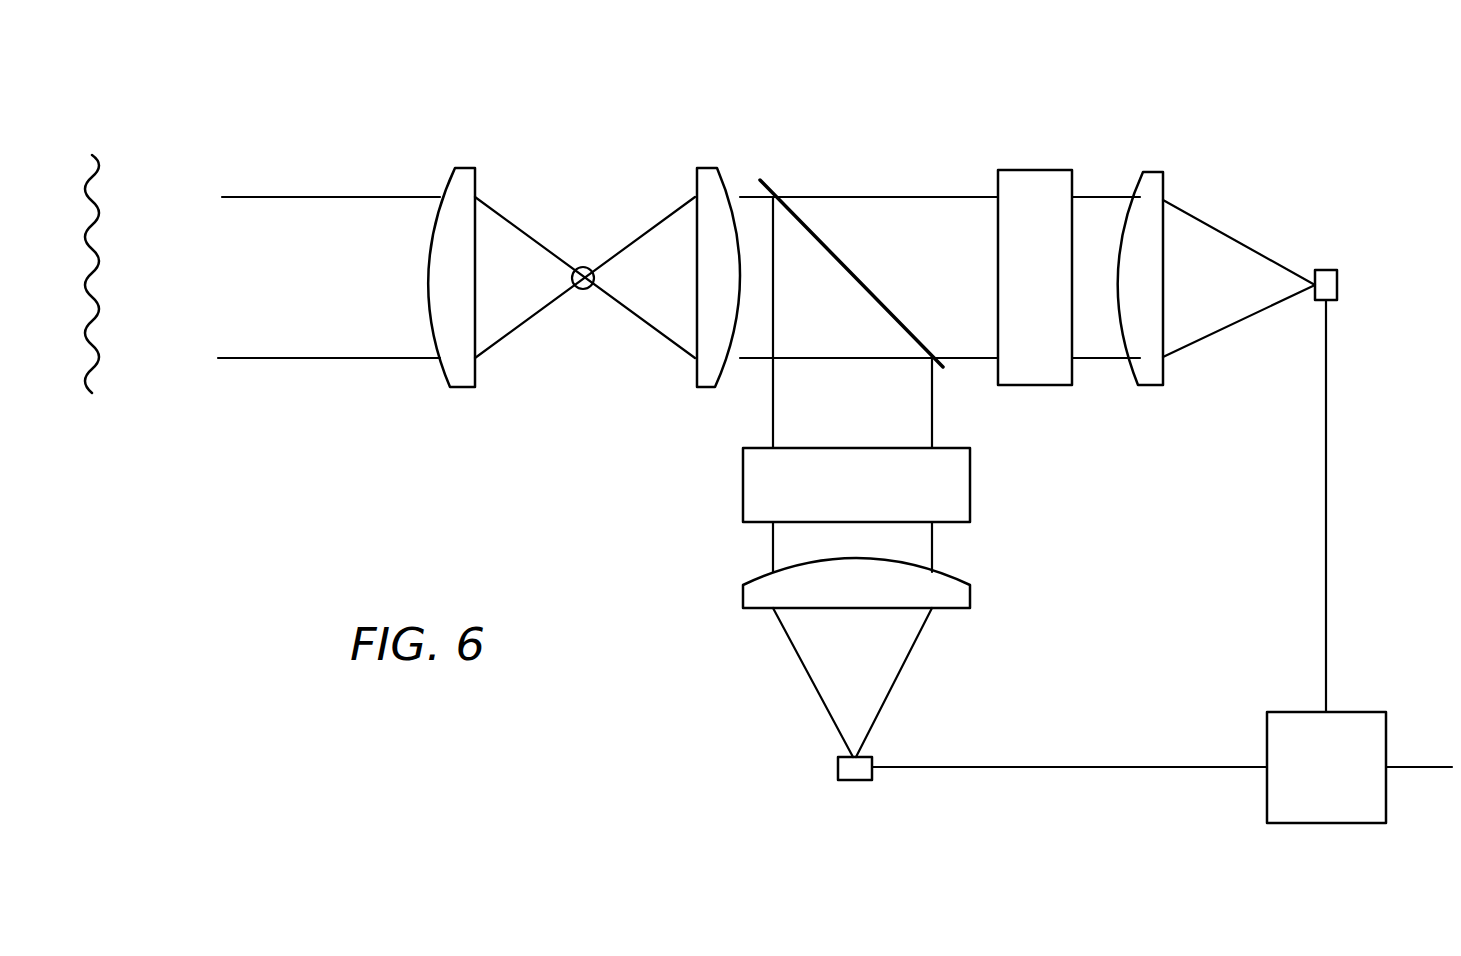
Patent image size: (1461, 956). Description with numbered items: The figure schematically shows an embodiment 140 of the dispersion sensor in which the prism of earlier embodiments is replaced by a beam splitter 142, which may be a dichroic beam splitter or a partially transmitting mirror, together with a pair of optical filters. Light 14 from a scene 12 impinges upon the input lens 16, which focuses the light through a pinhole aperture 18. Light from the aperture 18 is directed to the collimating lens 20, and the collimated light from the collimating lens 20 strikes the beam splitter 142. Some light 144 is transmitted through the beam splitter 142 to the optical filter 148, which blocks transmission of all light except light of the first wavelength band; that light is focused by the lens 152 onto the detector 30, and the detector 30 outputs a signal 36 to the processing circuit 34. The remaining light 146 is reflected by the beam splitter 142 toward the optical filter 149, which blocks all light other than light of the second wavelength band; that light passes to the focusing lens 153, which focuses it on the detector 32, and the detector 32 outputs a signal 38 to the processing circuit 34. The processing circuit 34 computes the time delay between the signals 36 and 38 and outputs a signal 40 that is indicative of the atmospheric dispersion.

The scene 12 is at (97, 136).
The light 14 is at (346, 166).
The input lens 16 is at (462, 165).
The pinhole aperture 18 is at (585, 267).
The collimating lens 20 is at (703, 165).
The embodiment of the sensor 140 is at (892, 70).
The beam splitter 142 is at (842, 252).
The transmitted light 144 is at (948, 236).
The reflected light 146 is at (813, 414).
The optical filter 148 is at (1053, 168).
The optical filter 149 is at (972, 478).
The lens 152 is at (1168, 182).
The focusing lens 153 is at (962, 575).
The detector 30 is at (1327, 268).
The detector 32 is at (874, 760).
The processing circuit 34 is at (1360, 712).
The signal 36 is at (1328, 545).
The signal 38 is at (1056, 766).
The output signal 40 is at (1418, 766).